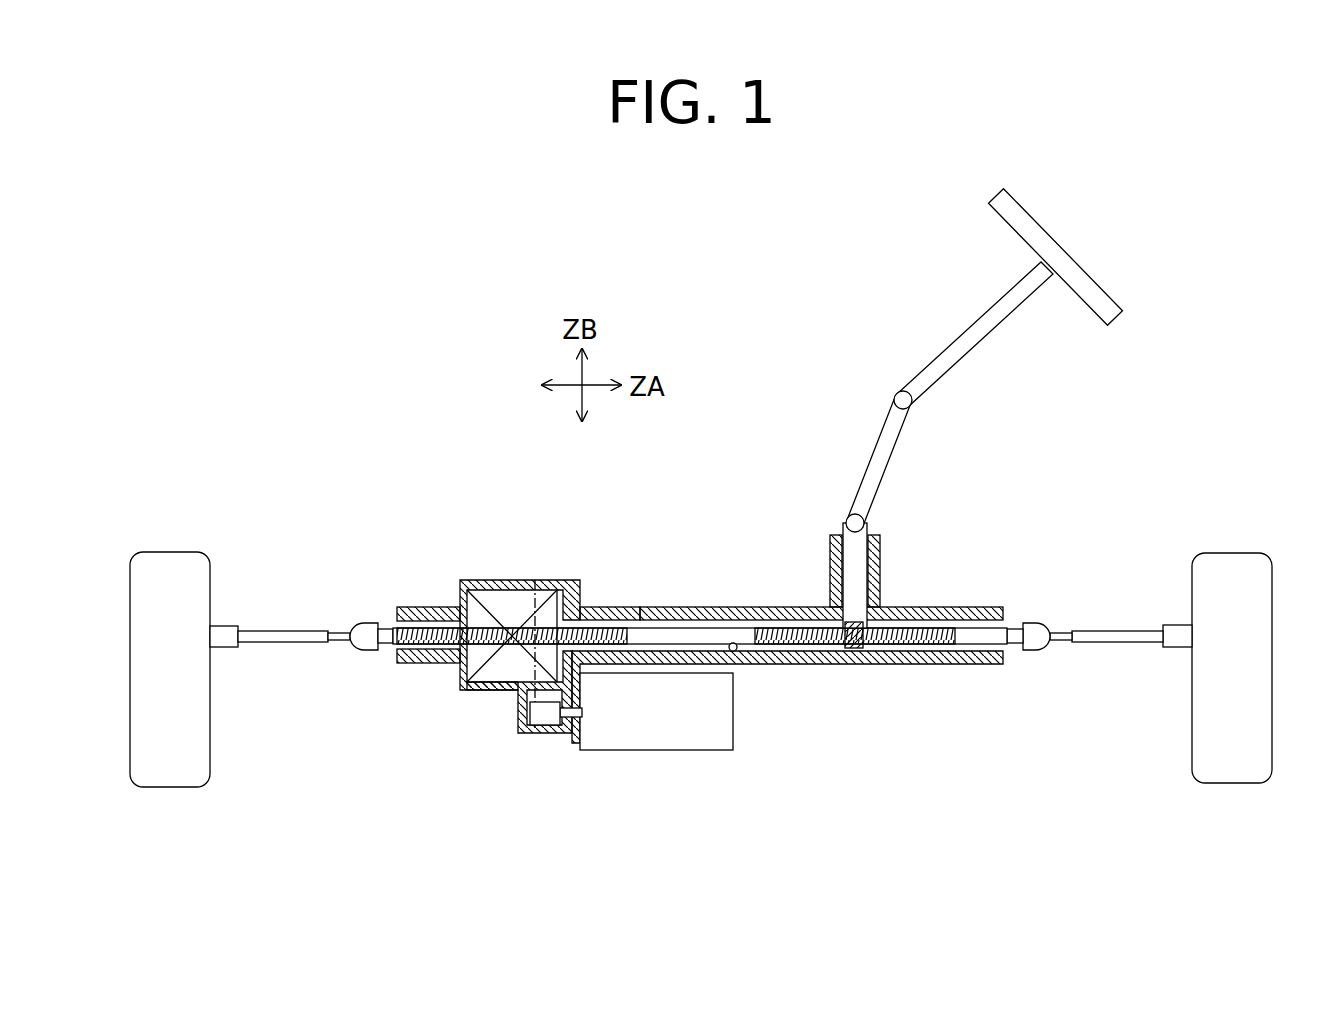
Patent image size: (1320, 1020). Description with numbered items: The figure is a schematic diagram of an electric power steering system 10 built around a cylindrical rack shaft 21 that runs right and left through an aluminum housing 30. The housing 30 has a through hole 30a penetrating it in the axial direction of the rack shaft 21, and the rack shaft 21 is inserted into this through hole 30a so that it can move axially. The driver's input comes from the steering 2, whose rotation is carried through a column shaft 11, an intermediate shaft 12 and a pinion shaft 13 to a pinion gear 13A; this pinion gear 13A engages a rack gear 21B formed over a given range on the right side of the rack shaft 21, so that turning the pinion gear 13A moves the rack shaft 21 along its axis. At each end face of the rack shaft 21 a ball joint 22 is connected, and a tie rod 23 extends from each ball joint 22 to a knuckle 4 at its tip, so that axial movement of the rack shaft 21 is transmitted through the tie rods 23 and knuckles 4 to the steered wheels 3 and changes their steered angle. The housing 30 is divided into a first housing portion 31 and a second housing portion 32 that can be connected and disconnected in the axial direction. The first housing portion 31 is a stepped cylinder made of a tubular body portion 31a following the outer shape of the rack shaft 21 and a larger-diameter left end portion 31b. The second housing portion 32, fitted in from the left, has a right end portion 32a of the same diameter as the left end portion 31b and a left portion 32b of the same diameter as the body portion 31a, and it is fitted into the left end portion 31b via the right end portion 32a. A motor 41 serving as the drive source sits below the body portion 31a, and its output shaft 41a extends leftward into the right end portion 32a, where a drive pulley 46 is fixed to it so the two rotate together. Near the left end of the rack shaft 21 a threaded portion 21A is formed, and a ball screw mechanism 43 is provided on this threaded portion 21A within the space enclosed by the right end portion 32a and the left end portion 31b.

The steering 2 is at (1080, 277).
The steered wheels 3 is at (172, 557).
The knuckles 4 is at (230, 649).
The electric power steering system 10 is at (465, 318).
The column shaft 11 is at (972, 327).
The intermediate shaft 12 is at (877, 450).
The pinion shaft 13 is at (833, 548).
The pinion gear 13A is at (852, 623).
The rack shaft 21 is at (700, 636).
The threaded portion 21A is at (615, 607).
The rack gear 21B is at (910, 624).
The ball joints 22 is at (367, 651).
The tie rods 23 is at (1124, 631).
The housing 30 is at (700, 600).
The through hole 30a is at (736, 653).
The first housing portion 31 is at (775, 621).
The body portion 31a is at (787, 641).
The left end portion 31b is at (568, 584).
The second housing portion 32 is at (488, 616).
The right end portion 32a is at (520, 636).
The left portion 32b is at (423, 604).
The motor 41 is at (613, 740).
The output shaft 41a is at (581, 712).
The ball screw mechanism 43 is at (490, 678).
The drive pulley 46 is at (545, 727).